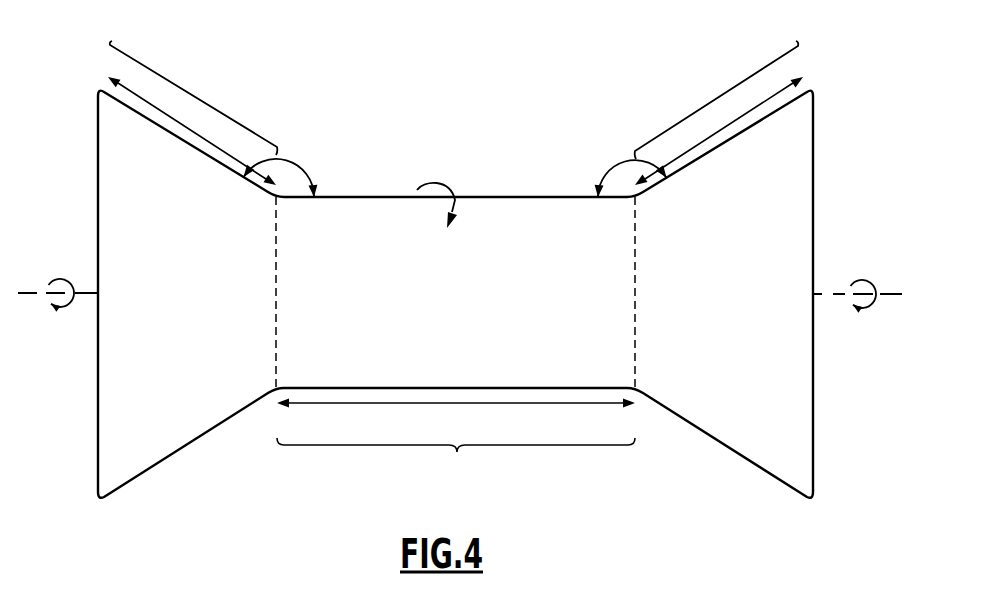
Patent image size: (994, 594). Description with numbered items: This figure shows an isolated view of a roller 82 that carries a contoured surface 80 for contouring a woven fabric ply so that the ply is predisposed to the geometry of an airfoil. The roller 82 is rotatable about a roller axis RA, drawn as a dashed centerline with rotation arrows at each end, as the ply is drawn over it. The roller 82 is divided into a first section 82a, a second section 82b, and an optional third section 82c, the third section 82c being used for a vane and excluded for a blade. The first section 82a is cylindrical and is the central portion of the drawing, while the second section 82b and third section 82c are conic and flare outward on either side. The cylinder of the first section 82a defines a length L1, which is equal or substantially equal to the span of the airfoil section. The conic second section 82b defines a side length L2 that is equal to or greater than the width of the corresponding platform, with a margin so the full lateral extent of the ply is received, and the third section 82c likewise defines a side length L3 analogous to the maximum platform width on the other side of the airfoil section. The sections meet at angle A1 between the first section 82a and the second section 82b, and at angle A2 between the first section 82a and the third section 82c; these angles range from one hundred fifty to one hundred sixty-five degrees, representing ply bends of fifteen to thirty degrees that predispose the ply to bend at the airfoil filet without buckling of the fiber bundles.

The contoured surface 80 is at (360, 197).
The roller 82 is at (554, 137).
The first section 82a is at (455, 345).
The second section 82b is at (192, 113).
The third section 82c is at (717, 113).
The length L1 is at (472, 404).
The side length L2 is at (213, 144).
The side length L3 is at (698, 144).
The angle A1 is at (299, 170).
The angle A2 is at (612, 168).
The roller axis RA is at (890, 294).